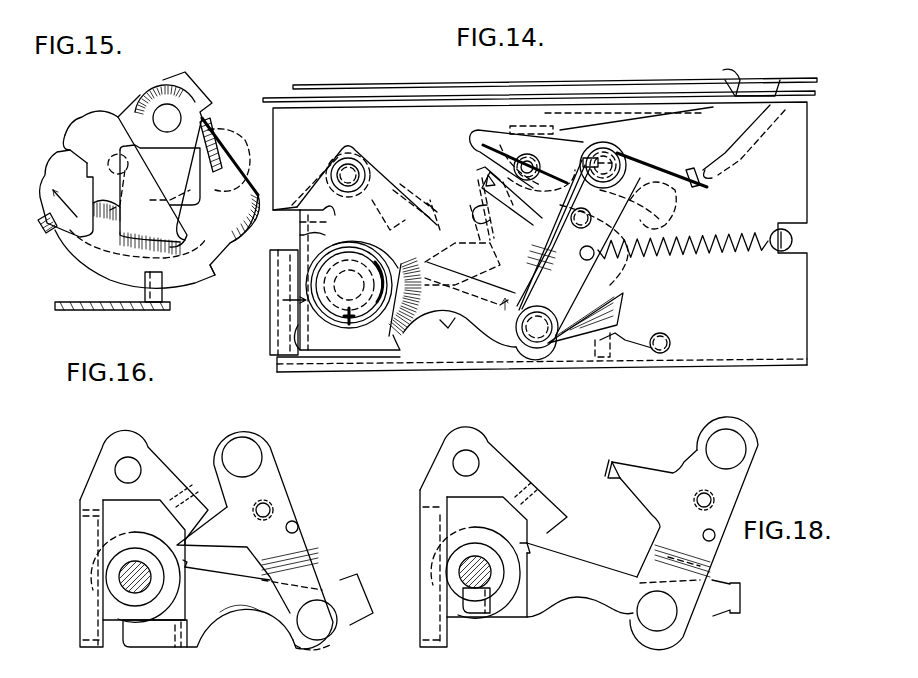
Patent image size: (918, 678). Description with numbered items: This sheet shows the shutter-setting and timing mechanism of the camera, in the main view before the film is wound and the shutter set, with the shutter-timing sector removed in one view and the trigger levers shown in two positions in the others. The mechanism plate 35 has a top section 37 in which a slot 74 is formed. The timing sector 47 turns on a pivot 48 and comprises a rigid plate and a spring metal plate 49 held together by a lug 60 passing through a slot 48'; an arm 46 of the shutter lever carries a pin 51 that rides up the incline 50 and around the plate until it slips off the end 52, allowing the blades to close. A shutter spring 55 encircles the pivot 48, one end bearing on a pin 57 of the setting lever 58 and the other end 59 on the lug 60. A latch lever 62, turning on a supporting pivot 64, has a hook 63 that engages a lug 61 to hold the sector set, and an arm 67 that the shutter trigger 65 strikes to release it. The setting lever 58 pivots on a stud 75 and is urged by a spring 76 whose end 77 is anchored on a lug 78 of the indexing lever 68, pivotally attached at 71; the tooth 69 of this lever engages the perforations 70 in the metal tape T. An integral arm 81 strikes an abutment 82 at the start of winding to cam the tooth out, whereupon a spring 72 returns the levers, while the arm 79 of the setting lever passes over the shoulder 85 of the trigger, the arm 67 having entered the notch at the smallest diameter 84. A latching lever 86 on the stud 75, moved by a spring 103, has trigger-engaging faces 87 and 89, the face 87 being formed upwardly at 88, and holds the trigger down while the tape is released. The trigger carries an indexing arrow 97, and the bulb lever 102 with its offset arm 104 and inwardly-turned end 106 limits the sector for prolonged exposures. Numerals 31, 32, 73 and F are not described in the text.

In FIG. 14, the base plate 31 is at (277, 352).
In FIG. 14, the slot 32 is at (366, 182).
In FIG. 14, the mechanism plate 35 is at (782, 366).
In FIG. 15, the top section 37 is at (84, 118).
In FIG. 14, the top section 37 is at (798, 330).
In FIG. 15, the arm 46 is at (68, 301).
In FIG. 15, the timing sector 47 is at (118, 116).
In FIG. 14, the timing sector 47 is at (678, 196).
In FIG. 14, the pivot 48 is at (514, 168).
In FIG. 15, the slot 48' is at (232, 145).
In FIG. 15, the spring metal plate 49 is at (205, 282).
In FIG. 15, the incline 50 is at (52, 234).
In FIG. 15, the pin 51 is at (166, 296).
In FIG. 15, the end 52 is at (216, 269).
In FIG. 14, the shutter spring 55 is at (548, 142).
In FIG. 15, the pin 57 is at (130, 175).
In FIG. 14, the pin 57 is at (580, 228).
In FIG. 16, the pin 57 is at (274, 512).
In FIG. 18, the pin 57 is at (714, 500).
In FIG. 14, the setting lever 58 is at (625, 282).
In FIG. 16, the setting lever 58 is at (279, 489).
In FIG. 18, the setting lever 58 is at (663, 527).
In FIG. 14, the end 59 is at (594, 157).
In FIG. 15, the lug 60 is at (203, 160).
In FIG. 15, the lug 61 is at (68, 150).
In FIG. 14, the latch lever 62 is at (322, 179).
In FIG. 16, the latch lever 62 is at (100, 476).
In FIG. 18, the latch lever 62 is at (432, 482).
In FIG. 14, the hook 63 is at (482, 270).
In FIG. 14, the supporting pivot 64 is at (348, 172).
In FIG. 16, the supporting pivot 64 is at (129, 464).
In FIG. 18, the supporting pivot 64 is at (458, 458).
In FIG. 14, the shutter trigger 65 is at (298, 250).
In FIG. 16, the shutter trigger 65 is at (140, 536).
In FIG. 18, the shutter trigger 65 is at (462, 530).
In FIG. 14, the arm 67 is at (270, 322).
In FIG. 16, the arm 67 is at (83, 637).
In FIG. 18, the arm 67 is at (425, 610).
In FIG. 14, the indexing lever 68 is at (741, 160).
In FIG. 14, the tooth 69 is at (740, 82).
In FIG. 14, the perforations 70 is at (342, 86).
In FIG. 14, the pivot 71 is at (613, 156).
In FIG. 16, the pivot 71 is at (258, 446).
In FIG. 18, the pivot 71 is at (716, 438).
In FIG. 14, the spring 72 is at (750, 246).
In FIG. 18, the spring 72 is at (692, 460).
In FIG. 15, the cam 73 is at (173, 207).
In FIG. 14, the cam 73 is at (632, 201).
In FIG. 15, the slot 74 is at (126, 166).
In FIG. 14, the slot 74 is at (481, 192).
In FIG. 14, the stud 75 is at (534, 332).
In FIG. 16, the stud 75 is at (320, 625).
In FIG. 18, the stud 75 is at (650, 620).
In FIG. 14, the spring 76 is at (535, 222).
In FIG. 14, the end 77 is at (700, 186).
In FIG. 14, the lug 78 is at (713, 176).
In FIG. 14, the arm 79 is at (478, 178).
In FIG. 16, the arm 79 is at (185, 537).
In FIG. 18, the arm 79 is at (611, 461).
In FIG. 14, the integral arm 81 is at (484, 138).
In FIG. 14, the abutment 82 is at (333, 165).
In FIG. 16, the smallest diameter 84 is at (120, 580).
In FIG. 18, the smallest diameter 84 is at (458, 573).
In FIG. 16, the shoulder 85 is at (108, 570).
In FIG. 18, the shoulder 85 is at (482, 545).
In FIG. 14, the latching lever 86 is at (478, 322).
In FIG. 16, the latching lever 86 is at (244, 610).
In FIG. 18, the latching lever 86 is at (565, 603).
In FIG. 14, the trigger-engaging face 87 is at (395, 330).
In FIG. 16, the trigger-engaging face 87 is at (150, 623).
In FIG. 18, the trigger-engaging face 87 is at (485, 614).
In FIG. 16, the upwardly formed portion 88 is at (190, 640).
In FIG. 16, the trigger-engaging face 89 is at (187, 593).
In FIG. 18, the trigger-engaging face 89 is at (523, 548).
In FIG. 14, the indexing arrow 97 is at (348, 327).
In FIG. 14, the bulb lever 102 is at (449, 322).
In FIG. 14, the spring 103 is at (636, 340).
In FIG. 14, the offset arm 104 is at (472, 212).
In FIG. 14, the inwardly-turned end 106 is at (380, 255).
In FIG. 14, the metal tape T is at (664, 78).
In FIG. 14, the frame F is at (806, 93).